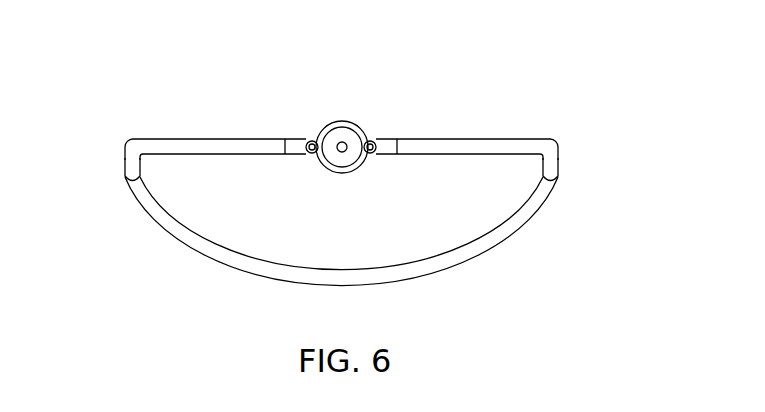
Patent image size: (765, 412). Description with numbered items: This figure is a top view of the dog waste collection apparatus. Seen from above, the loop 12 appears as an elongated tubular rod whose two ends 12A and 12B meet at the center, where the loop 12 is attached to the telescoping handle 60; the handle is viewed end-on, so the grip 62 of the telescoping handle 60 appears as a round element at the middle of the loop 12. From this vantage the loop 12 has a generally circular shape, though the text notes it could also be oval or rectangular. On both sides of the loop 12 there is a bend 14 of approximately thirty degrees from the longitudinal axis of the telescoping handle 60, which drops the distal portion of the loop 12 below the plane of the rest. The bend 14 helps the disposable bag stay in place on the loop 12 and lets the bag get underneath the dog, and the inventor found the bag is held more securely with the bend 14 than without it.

The loop 12 is at (513, 138).
The end of loop 12A is at (312, 135).
The end of loop 12B is at (370, 135).
The bend 14 is at (123, 158).
The telescoping handle 60 is at (347, 120).
The grip 62 is at (357, 171).